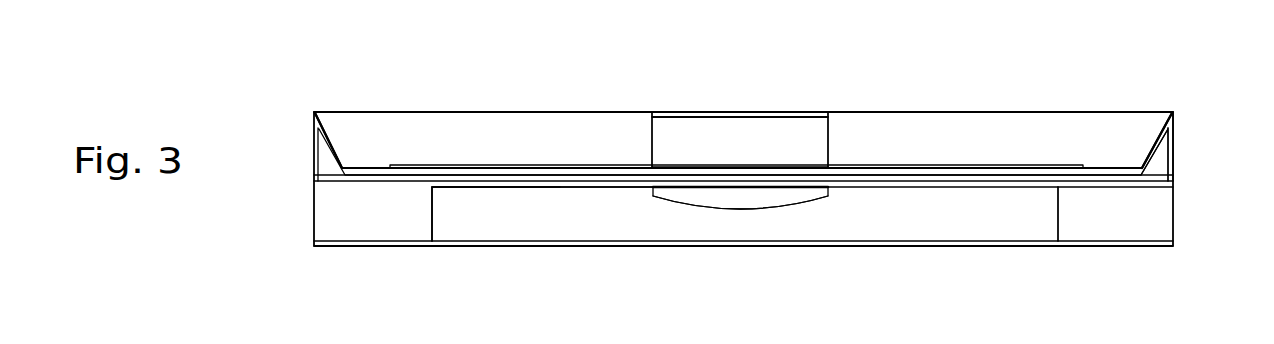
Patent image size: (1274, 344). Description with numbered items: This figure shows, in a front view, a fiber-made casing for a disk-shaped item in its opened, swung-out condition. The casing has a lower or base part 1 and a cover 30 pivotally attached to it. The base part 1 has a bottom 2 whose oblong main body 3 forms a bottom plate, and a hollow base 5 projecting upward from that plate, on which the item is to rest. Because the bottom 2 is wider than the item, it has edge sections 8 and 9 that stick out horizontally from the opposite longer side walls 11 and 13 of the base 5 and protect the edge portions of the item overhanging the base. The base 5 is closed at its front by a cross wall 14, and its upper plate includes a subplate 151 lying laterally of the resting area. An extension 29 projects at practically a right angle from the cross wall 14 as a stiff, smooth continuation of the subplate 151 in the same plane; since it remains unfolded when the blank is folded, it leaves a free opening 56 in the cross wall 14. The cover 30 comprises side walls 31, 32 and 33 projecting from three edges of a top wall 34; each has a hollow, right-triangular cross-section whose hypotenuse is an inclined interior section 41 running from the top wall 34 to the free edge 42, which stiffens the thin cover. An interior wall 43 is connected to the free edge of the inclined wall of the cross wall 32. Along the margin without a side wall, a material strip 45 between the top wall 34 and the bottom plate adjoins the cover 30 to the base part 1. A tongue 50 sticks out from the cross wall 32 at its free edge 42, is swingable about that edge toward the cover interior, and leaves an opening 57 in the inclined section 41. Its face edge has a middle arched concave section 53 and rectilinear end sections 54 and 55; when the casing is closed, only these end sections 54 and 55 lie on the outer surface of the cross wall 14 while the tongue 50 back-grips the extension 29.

The base part 1 is at (280, 251).
The bottom 2 is at (1095, 248).
The main body of the bottom 3 is at (1060, 249).
The base 5 is at (426, 207).
The edge section of the bottom 8 is at (342, 246).
The edge section of the bottom 9 is at (1147, 246).
The longer side wall of the base 11 is at (432, 215).
The longer side wall of the base 13 is at (1057, 212).
The cross wall of the base 14 is at (868, 207).
The extension 29 is at (740, 190).
The cover 30 is at (398, 110).
The side wall of the cover 31 is at (312, 153).
The cross wall of the cover 32 is at (960, 109).
The side wall of the cover 33 is at (1178, 146).
The top wall of the cover 34 is at (366, 181).
The interior section of the side wall 41 is at (1018, 137).
The free edge of the side wall 42 is at (1176, 109).
The interior wall of the cover 43 is at (518, 165).
The material strip 45 is at (1147, 215).
The tongue 50 is at (803, 110).
The arched concave section of the face edge 53 is at (703, 117).
The rectilinear end section of the face edge 54 is at (651, 112).
The rectilinear end section of the face edge 55 is at (821, 116).
The opening in the base partition 56 is at (700, 204).
The opening in the cover wall 57 is at (760, 150).
The subplate 151 is at (542, 188).